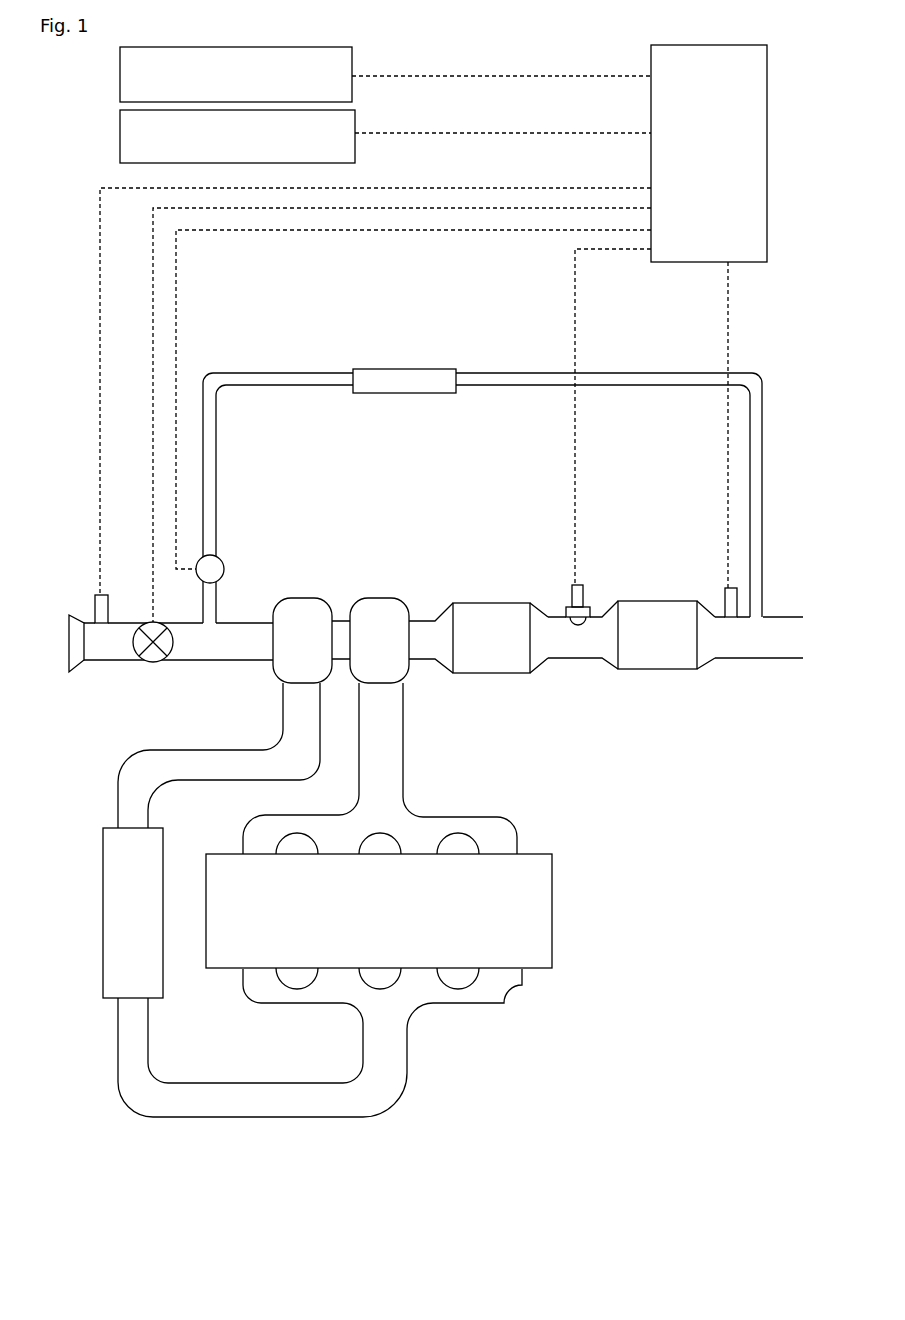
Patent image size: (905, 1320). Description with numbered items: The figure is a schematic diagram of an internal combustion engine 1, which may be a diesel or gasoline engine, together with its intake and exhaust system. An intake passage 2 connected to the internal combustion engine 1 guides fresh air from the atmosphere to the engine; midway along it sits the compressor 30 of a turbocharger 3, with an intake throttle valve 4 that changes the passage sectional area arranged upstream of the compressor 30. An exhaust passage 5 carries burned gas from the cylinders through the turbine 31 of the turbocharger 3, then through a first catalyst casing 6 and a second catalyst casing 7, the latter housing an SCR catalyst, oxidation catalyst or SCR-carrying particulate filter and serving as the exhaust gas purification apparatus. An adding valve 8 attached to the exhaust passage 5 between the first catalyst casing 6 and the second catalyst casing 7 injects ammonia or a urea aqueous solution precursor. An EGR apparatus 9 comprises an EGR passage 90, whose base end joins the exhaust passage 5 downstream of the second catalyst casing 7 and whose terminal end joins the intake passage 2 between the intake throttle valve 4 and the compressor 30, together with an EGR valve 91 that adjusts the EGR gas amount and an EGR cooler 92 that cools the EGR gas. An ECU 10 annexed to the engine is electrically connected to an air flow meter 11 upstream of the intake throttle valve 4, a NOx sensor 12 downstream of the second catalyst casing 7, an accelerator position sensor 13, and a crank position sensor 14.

The internal combustion engine 1 is at (553, 916).
The intake passage 2 is at (236, 1118).
The turbocharger 3 is at (338, 607).
The intake throttle valve 4 is at (150, 663).
The exhaust passage 5 is at (405, 782).
The first catalyst casing 6 is at (498, 675).
The second catalyst casing 7 is at (672, 669).
The adding valve 8 is at (566, 590).
The EGR apparatus 9 is at (335, 358).
The ECU 10 is at (767, 220).
The air flow meter 11 is at (93, 595).
The NOx sensor 12 is at (724, 592).
The accelerator position sensor 13 is at (120, 78).
The crank position sensor 14 is at (120, 135).
The compressor 30 is at (293, 598).
The turbine 31 is at (377, 598).
The EGR passage 90 is at (625, 373).
The EGR valve 91 is at (224, 560).
The EGR cooler 92 is at (408, 369).